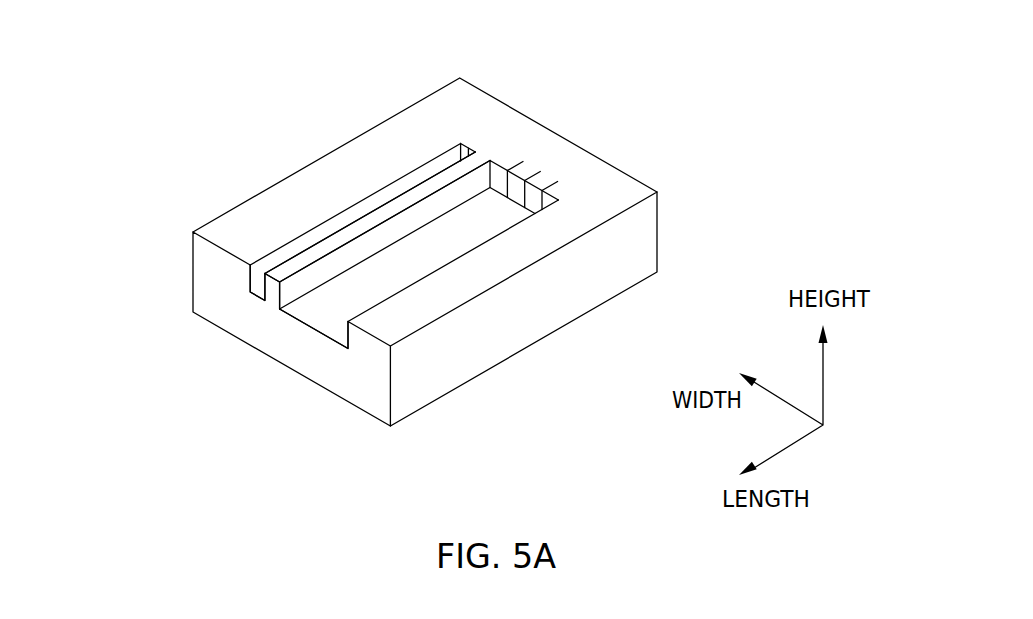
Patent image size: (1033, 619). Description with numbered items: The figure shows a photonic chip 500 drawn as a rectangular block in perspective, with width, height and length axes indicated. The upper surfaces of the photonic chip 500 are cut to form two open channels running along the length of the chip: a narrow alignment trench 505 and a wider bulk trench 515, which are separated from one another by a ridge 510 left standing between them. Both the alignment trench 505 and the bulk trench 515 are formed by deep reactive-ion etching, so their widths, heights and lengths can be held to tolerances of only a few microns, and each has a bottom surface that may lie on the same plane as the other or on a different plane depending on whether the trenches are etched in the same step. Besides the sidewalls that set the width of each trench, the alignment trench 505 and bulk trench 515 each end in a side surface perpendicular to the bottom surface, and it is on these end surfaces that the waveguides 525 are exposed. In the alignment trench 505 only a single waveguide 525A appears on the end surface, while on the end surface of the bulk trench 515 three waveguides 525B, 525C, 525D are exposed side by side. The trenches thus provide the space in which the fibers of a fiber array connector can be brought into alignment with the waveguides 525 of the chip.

The photonic chip 500 is at (658, 223).
The alignment trench 505 is at (251, 271).
The ridge 510 is at (270, 297).
The bulk trench 515 is at (342, 289).
The waveguides 525 is at (600, 111).
The waveguide 525A is at (475, 152).
The waveguide 525B is at (523, 162).
The waveguide 525C is at (540, 172).
The waveguide 525D is at (599, 170).